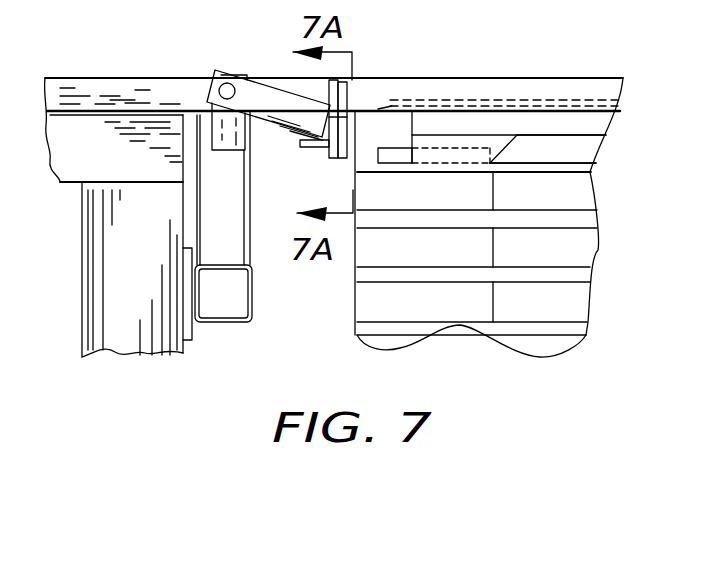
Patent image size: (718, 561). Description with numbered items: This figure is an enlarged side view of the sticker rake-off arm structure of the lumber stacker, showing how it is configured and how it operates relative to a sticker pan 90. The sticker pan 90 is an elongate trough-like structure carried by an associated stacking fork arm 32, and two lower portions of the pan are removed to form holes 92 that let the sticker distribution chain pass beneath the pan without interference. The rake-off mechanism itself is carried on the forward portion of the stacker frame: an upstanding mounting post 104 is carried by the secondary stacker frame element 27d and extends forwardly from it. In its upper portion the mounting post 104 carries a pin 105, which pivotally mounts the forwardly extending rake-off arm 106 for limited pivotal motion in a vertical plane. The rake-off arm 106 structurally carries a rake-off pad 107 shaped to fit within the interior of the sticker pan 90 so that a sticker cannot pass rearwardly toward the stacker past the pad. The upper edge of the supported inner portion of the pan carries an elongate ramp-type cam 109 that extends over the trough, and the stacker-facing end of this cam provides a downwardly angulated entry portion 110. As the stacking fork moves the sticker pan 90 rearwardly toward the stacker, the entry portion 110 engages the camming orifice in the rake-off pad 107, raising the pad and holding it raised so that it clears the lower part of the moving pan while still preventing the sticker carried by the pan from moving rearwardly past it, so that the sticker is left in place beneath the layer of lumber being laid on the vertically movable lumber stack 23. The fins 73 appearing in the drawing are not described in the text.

The stacking fork arm 32 is at (137, 93).
The pin 105 is at (226, 84).
The rake-off arm 106 is at (264, 88).
The entry portion 110 is at (388, 102).
The sticker pan 90 is at (455, 138).
The ramp-type cam 109 is at (503, 100).
The holes 92 is at (552, 151).
The fins 73 is at (570, 218).
The lumber stack 23 is at (598, 276).
The mounting post 104 is at (216, 215).
The rake-off pad 107 is at (345, 160).
The secondary stacker frame element 27d is at (237, 323).